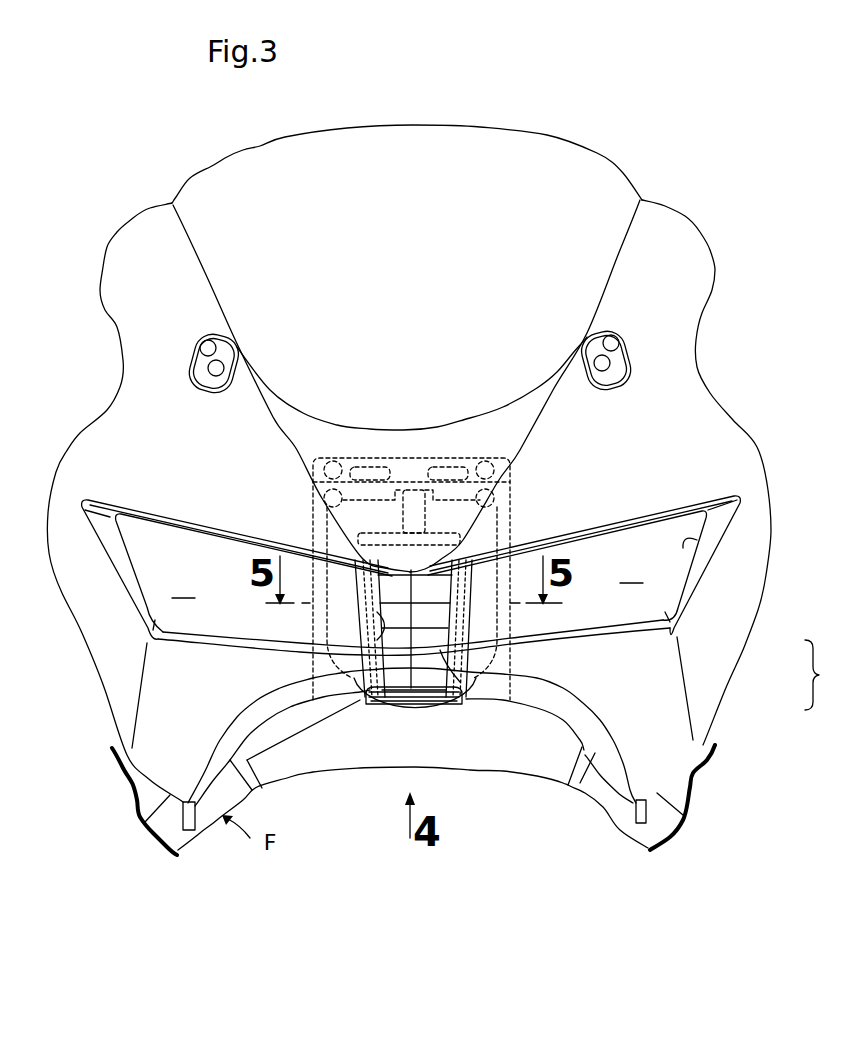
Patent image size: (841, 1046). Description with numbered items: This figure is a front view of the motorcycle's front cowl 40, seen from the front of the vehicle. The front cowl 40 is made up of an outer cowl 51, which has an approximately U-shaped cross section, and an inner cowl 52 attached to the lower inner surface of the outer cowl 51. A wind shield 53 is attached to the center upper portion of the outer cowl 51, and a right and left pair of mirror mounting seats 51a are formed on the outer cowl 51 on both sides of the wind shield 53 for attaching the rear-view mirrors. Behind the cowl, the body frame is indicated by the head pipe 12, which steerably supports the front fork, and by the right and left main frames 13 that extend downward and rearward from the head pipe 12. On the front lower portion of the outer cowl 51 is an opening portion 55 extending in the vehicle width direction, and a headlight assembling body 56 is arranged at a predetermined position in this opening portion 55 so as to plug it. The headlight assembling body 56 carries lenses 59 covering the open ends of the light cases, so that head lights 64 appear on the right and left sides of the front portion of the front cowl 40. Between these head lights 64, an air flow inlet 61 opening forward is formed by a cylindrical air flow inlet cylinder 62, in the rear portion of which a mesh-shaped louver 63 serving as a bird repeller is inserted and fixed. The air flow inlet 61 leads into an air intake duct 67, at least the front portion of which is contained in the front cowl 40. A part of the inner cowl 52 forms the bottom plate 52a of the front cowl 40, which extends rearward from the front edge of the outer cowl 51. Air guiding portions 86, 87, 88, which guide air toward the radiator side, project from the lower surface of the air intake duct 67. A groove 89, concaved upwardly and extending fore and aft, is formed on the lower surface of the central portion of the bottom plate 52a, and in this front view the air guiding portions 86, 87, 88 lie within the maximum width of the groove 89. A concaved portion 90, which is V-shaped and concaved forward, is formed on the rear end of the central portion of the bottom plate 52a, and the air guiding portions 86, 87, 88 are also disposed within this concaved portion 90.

The head pipe 12 is at (308, 764).
The main frames 13 is at (150, 795).
The front cowl 40 is at (823, 675).
The outer cowl 51 is at (720, 652).
The mirror mounting seats 51a is at (190, 354).
The inner cowl 52 is at (612, 715).
The bottom plate 52a is at (545, 690).
The wind shield 53 is at (618, 203).
The opening portion 55 is at (695, 553).
The headlight assembling body 56 is at (254, 642).
The lenses 59 is at (162, 537).
The air flow inlet 61 is at (330, 652).
The air flow inlet cylinder 62 is at (523, 562).
The louver 63 is at (463, 517).
The head lights 64 is at (407, 577).
The air intake duct 67 is at (300, 517).
The air guiding portion 86 is at (385, 704).
The air guiding portion 87 is at (380, 705).
The air guiding portion 88 is at (365, 704).
The groove 89 is at (458, 688).
The concaved portion 90 is at (423, 708).